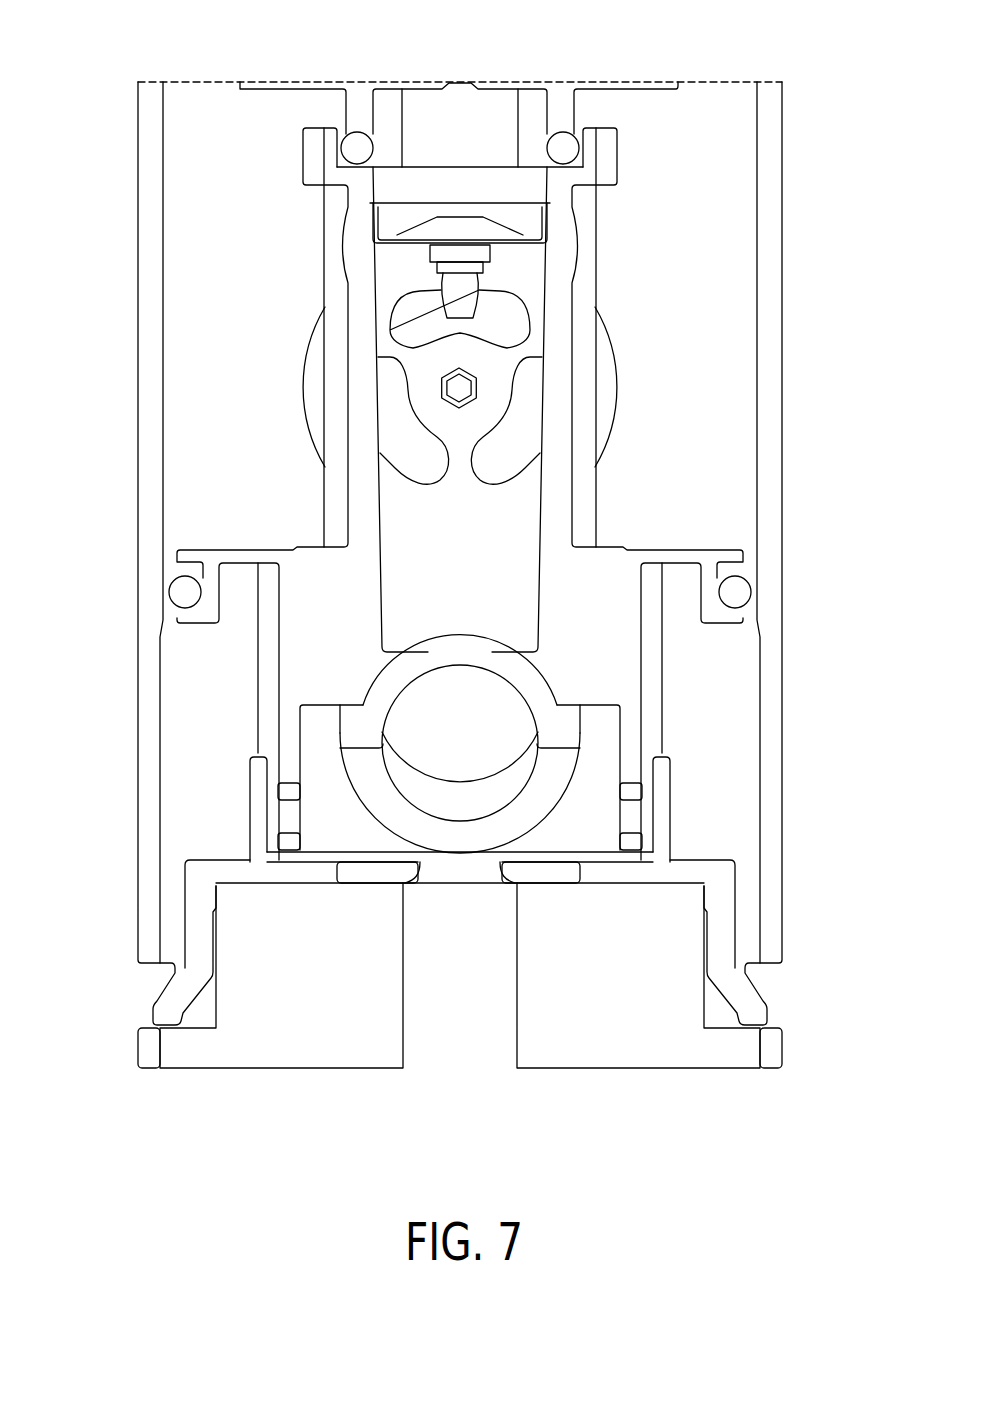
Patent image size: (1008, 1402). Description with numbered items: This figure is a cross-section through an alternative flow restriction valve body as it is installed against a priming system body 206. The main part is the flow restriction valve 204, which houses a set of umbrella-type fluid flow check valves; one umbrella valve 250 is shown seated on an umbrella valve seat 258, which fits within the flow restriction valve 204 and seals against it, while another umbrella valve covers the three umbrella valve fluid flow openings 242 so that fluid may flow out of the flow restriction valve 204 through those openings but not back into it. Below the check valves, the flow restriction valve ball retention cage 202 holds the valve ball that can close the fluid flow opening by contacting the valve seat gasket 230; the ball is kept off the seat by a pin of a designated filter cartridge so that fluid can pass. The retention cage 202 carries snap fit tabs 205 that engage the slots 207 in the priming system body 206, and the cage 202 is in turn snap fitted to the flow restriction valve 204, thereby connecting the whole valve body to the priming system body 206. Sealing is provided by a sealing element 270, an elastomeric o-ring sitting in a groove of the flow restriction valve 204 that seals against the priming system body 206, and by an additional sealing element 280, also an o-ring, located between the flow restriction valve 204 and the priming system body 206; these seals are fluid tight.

The flow restriction valve ball retention cage 202 is at (720, 873).
The flow restriction valve 204 is at (603, 632).
The snap fit tabs 205 is at (753, 1012).
The priming system body 206 is at (390, 107).
The slots 207 is at (145, 985).
The valve seat gasket 230 is at (373, 788).
The umbrella valve fluid flow openings 242 is at (411, 326).
The umbrella valve 250 is at (487, 230).
The umbrella valve seat 258 is at (397, 217).
The sealing element 270 is at (745, 594).
The sealing element 280 is at (562, 140).